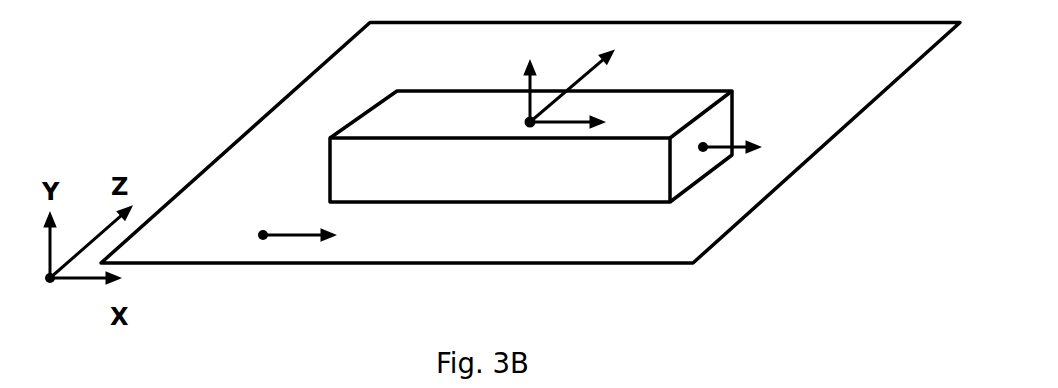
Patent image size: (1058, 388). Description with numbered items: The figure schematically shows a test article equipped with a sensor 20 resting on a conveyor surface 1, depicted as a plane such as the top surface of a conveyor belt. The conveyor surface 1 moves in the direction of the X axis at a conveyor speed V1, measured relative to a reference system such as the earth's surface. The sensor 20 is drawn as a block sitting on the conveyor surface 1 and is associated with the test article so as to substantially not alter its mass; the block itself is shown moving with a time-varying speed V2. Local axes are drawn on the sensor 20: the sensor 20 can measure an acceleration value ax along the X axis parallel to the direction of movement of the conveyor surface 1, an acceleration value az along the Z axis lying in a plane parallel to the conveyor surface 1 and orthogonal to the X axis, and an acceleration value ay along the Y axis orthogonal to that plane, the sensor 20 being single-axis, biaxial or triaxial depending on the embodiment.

The conveyor surface 1 is at (530, 143).
The sensor 20 is at (573, 114).
The conveyor speed V1 is at (317, 238).
The time-varying velocity of object 20 V2 is at (757, 132).
The acceleration value along the X axis ax is at (586, 117).
The acceleration value along the Y axis ay is at (532, 74).
The acceleration value along the Z axis az is at (588, 80).